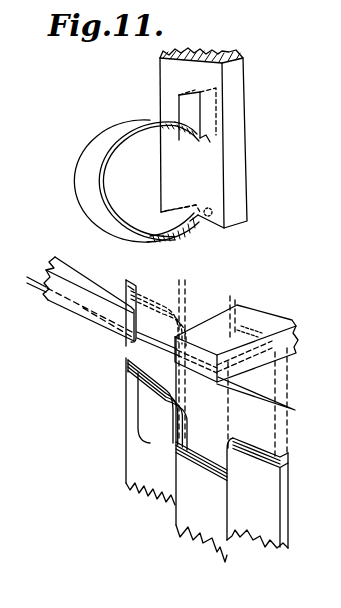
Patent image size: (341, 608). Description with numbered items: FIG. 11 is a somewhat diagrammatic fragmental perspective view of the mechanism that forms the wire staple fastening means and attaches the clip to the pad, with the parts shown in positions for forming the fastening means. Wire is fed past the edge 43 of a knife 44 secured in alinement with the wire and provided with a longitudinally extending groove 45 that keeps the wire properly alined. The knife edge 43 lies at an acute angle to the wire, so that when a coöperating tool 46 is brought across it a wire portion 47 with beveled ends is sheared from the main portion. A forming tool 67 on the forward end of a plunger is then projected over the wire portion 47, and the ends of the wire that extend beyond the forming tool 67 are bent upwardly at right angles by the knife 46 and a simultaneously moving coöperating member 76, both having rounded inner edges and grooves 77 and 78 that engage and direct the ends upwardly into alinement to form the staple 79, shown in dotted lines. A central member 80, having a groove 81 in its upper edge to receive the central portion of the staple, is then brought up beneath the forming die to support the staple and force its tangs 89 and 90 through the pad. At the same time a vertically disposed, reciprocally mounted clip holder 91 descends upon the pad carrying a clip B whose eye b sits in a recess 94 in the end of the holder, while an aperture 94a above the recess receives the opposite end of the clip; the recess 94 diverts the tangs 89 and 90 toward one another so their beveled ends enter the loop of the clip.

The clip B is at (107, 130).
The clip holder 91 is at (237, 126).
The aperture 94a is at (188, 108).
The recess 94 is at (218, 210).
The eye b is at (203, 207).
The knife 44 is at (85, 307).
The longitudinally extending groove 45 is at (117, 327).
The knife edge 43 is at (131, 351).
The wire portion 47 is at (139, 338).
The tang 89 is at (192, 280).
The tang 90 is at (233, 307).
The staple 79 is at (237, 306).
The forming tool 67 is at (267, 321).
The coöperating tool 46 is at (132, 411).
The groove 77 is at (172, 407).
The groove 81 is at (202, 449).
The groove 78 is at (233, 440).
The central member 80 is at (185, 515).
The coöperating member 76 is at (263, 507).